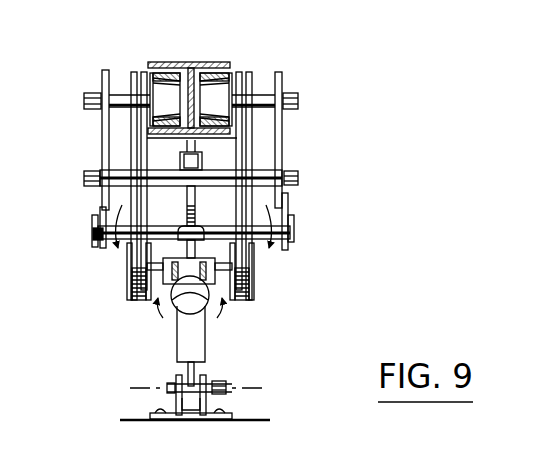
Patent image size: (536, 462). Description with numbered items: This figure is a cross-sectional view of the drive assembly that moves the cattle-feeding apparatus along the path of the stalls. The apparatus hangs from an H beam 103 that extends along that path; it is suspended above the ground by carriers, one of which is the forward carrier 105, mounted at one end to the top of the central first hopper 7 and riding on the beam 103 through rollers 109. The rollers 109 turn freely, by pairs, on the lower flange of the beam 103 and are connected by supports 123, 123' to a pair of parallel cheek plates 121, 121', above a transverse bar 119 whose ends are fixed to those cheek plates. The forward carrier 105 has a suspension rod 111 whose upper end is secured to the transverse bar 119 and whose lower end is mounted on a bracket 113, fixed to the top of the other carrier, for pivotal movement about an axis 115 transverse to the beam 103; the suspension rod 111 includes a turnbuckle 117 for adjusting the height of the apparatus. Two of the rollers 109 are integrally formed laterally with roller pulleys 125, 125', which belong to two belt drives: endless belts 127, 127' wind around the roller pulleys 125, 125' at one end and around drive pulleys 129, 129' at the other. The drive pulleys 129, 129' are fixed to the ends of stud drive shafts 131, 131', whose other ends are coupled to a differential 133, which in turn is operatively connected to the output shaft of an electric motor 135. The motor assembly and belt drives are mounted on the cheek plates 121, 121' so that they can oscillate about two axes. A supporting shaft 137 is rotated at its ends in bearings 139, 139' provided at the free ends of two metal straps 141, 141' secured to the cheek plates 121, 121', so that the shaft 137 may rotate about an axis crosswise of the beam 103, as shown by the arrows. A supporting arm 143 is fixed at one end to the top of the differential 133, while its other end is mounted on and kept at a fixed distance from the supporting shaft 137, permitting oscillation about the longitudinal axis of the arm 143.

The central first hopper 7 is at (245, 418).
The H beam 103 is at (197, 60).
The forward carrier 105 is at (192, 162).
The rollers 109 is at (176, 111).
The suspension rod 111 is at (197, 200).
The bracket 113 is at (176, 402).
The axis 115 is at (245, 386).
The turnbuckle 117 is at (205, 342).
The transverse bar 119 is at (255, 168).
The cheek plate 121 is at (63, 140).
The cheek plate 121' is at (299, 140).
The support 123 is at (95, 87).
The support 123' is at (284, 84).
The roller pulley 125 is at (105, 166).
The roller pulley 125' is at (267, 162).
The endless belt 127 is at (156, 181).
The endless belt 127' is at (294, 181).
The drive pulley 129 is at (121, 271).
The drive pulley 129' is at (277, 271).
The stud drive shaft 131 is at (125, 301).
The stud drive shaft 131' is at (243, 302).
The differential 133 is at (178, 292).
The electric motor 135 is at (182, 322).
The supporting shaft 137 is at (112, 243).
The bearing 139 is at (70, 231).
The bearing 139' is at (312, 228).
The metal strap 141 is at (64, 223).
The metal strap 141' is at (313, 207).
The supporting arm 143 is at (180, 230).